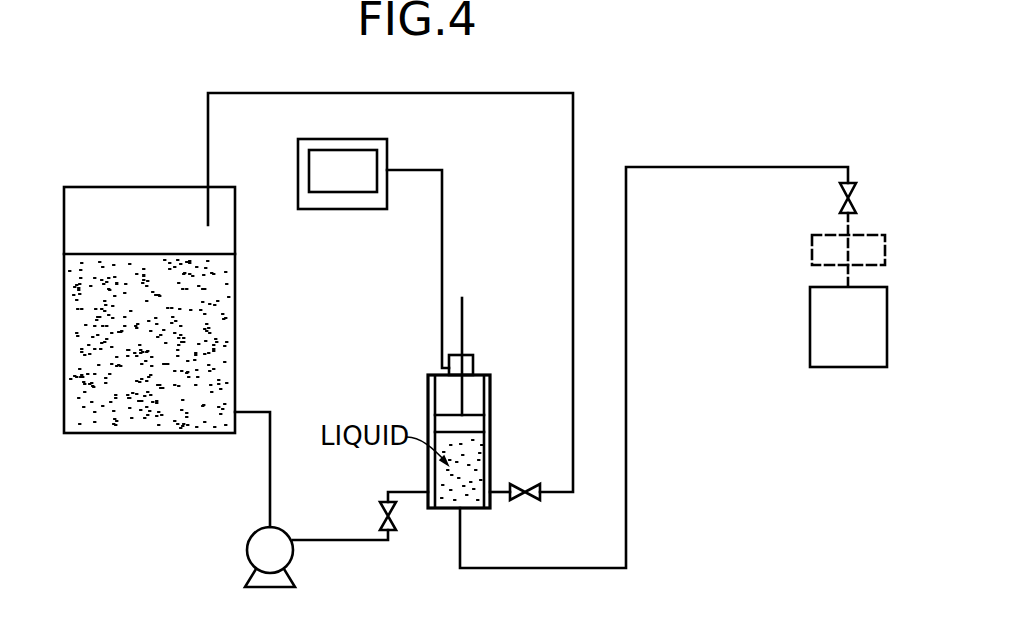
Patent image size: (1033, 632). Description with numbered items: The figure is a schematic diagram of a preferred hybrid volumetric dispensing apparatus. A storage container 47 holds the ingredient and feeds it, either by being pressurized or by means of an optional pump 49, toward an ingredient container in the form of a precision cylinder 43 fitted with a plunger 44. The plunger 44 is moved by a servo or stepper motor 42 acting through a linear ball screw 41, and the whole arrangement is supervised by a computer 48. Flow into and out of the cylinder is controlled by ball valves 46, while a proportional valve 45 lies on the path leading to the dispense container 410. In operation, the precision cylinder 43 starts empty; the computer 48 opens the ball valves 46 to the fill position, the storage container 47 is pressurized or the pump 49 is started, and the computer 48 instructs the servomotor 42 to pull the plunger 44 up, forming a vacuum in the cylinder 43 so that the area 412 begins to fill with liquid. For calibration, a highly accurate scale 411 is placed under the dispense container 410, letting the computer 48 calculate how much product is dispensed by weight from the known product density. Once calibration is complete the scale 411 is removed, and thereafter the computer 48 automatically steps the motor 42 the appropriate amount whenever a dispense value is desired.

The linear ball screw 41 is at (463, 313).
The servo or stepper motor 42 is at (473, 360).
The precision cylinder 43 is at (430, 377).
The plunger 44 is at (447, 420).
The proportional valve 45 is at (840, 190).
The ball valves 46 is at (395, 513).
The storage container 47 is at (226, 246).
The computer 48 is at (345, 209).
The pump 49 is at (250, 538).
The dispense container 410 is at (810, 330).
The scale 411 is at (812, 257).
The area 412 is at (475, 452).